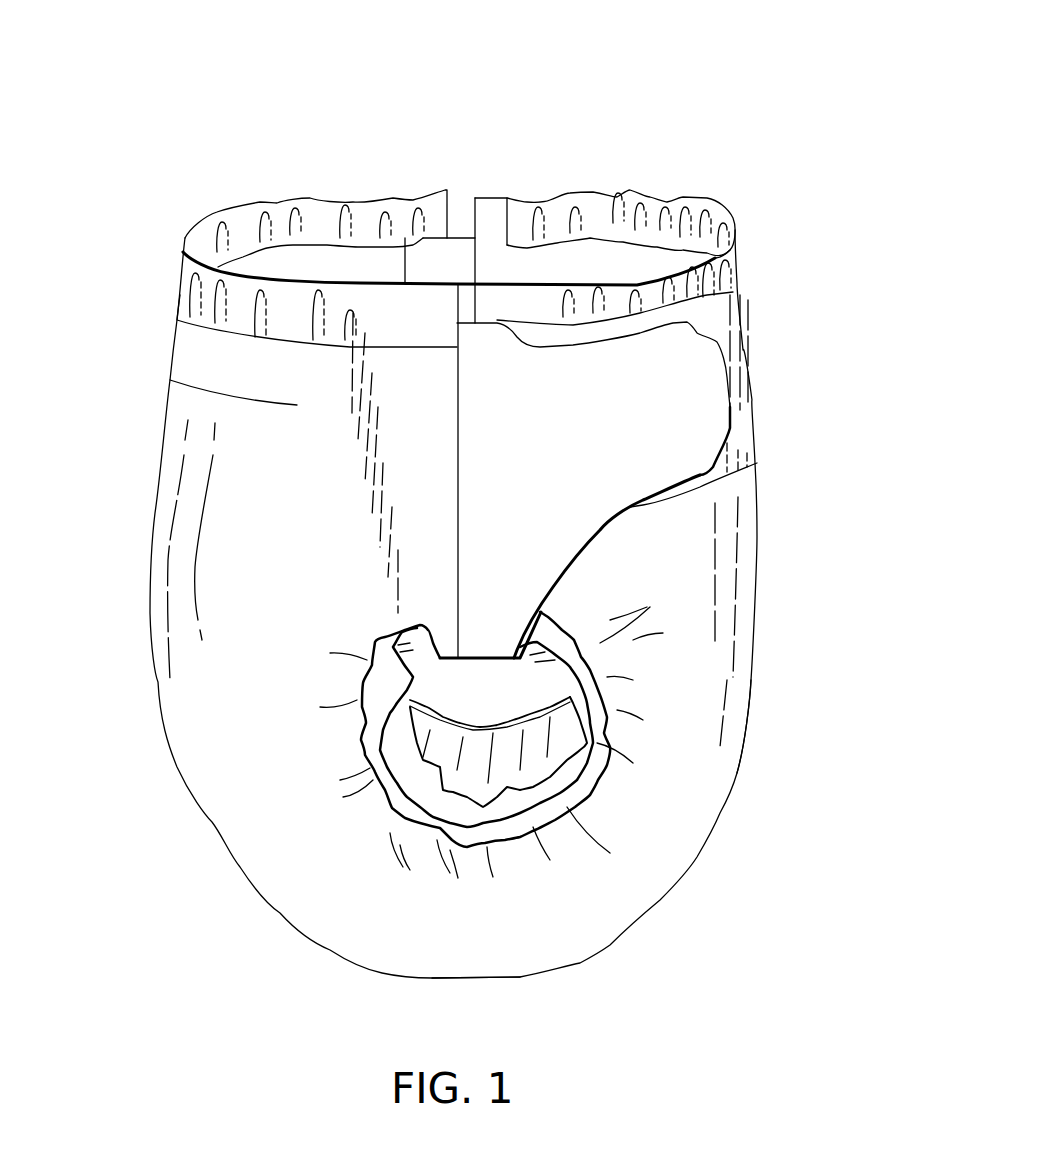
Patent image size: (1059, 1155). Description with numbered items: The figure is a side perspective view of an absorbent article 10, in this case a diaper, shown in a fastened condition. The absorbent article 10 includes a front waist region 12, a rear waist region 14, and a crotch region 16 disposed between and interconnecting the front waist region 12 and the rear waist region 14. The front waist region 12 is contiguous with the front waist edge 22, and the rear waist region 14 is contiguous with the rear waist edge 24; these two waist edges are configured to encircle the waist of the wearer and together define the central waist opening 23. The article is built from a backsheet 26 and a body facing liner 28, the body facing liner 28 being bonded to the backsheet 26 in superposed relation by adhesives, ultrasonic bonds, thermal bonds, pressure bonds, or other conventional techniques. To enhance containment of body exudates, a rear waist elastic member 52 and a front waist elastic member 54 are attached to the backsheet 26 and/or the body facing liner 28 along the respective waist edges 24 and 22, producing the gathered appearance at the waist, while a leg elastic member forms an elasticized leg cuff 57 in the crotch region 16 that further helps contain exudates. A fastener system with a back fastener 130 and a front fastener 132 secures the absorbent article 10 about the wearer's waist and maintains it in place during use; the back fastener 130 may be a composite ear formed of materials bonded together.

The absorbent article 10 is at (571, 60).
The front waist region 12 is at (783, 553).
The rear waist region 14 is at (130, 605).
The crotch region 16 is at (571, 990).
The front waist edge 22 is at (737, 227).
The central waist opening 23 is at (507, 272).
The rear waist edge 24 is at (185, 240).
The backsheet 26 is at (698, 810).
The body facing liner 28 is at (303, 262).
The rear waist elastic member 52 is at (240, 228).
The front waist elastic member 54 is at (673, 217).
The elasticized leg cuff 57 is at (557, 862).
The back fastener 130 is at (683, 447).
The front fastener 132 is at (723, 333).